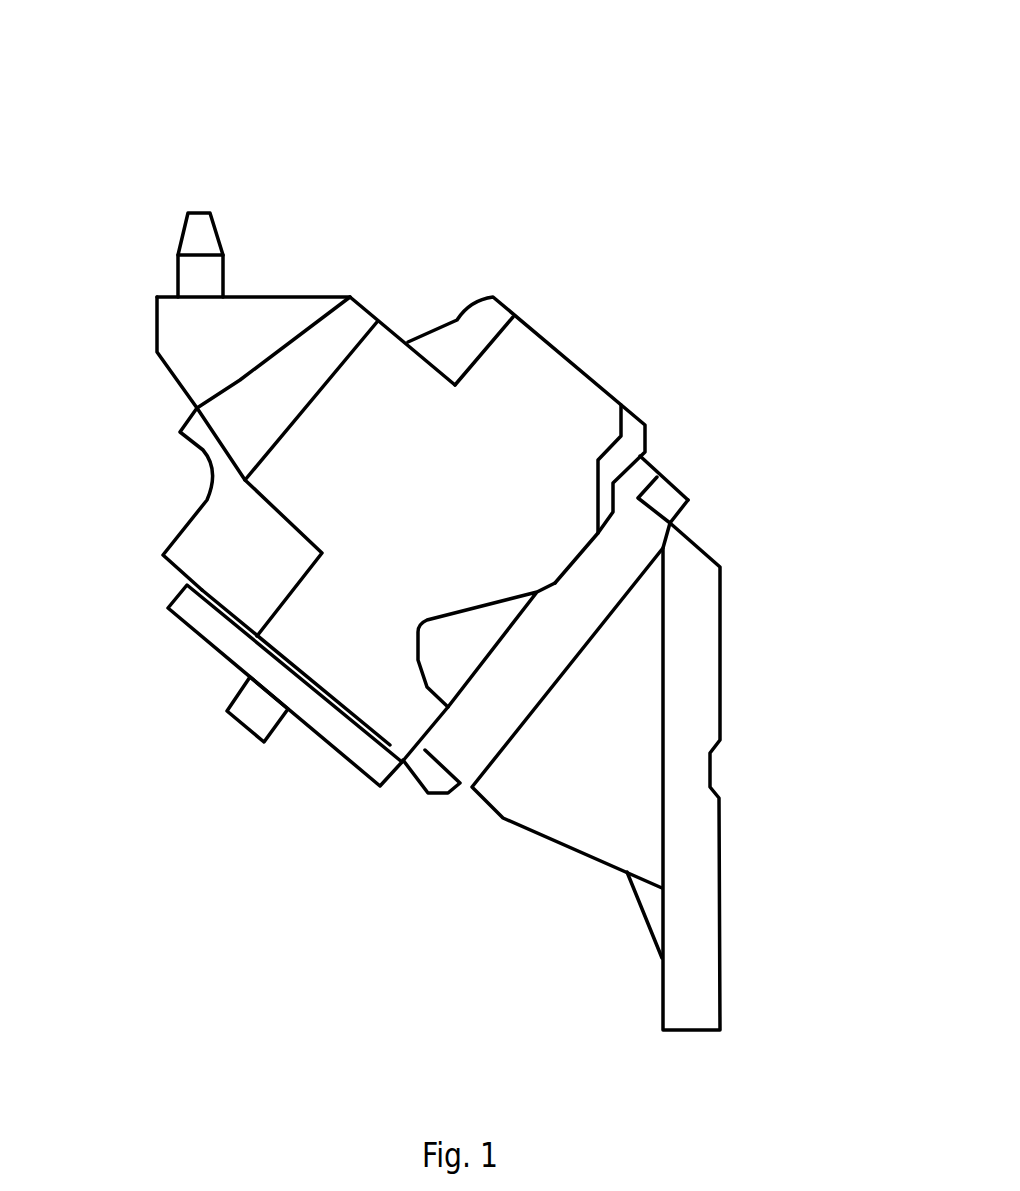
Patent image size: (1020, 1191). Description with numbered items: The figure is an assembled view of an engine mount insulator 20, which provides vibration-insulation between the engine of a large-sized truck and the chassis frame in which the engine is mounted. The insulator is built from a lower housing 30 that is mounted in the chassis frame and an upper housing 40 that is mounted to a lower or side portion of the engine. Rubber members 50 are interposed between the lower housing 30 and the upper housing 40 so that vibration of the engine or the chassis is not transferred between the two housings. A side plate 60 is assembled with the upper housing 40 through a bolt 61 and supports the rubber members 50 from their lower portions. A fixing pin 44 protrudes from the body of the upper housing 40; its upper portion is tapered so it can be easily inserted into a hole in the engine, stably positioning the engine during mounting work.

The engine mount insulator 20 is at (668, 340).
The fixing pin 44 is at (200, 212).
The upper housing 40 is at (352, 663).
The rubber members 50 is at (445, 657).
The lower housing 30 is at (570, 787).
The side plate 60 is at (217, 635).
The bolt 61 is at (247, 713).